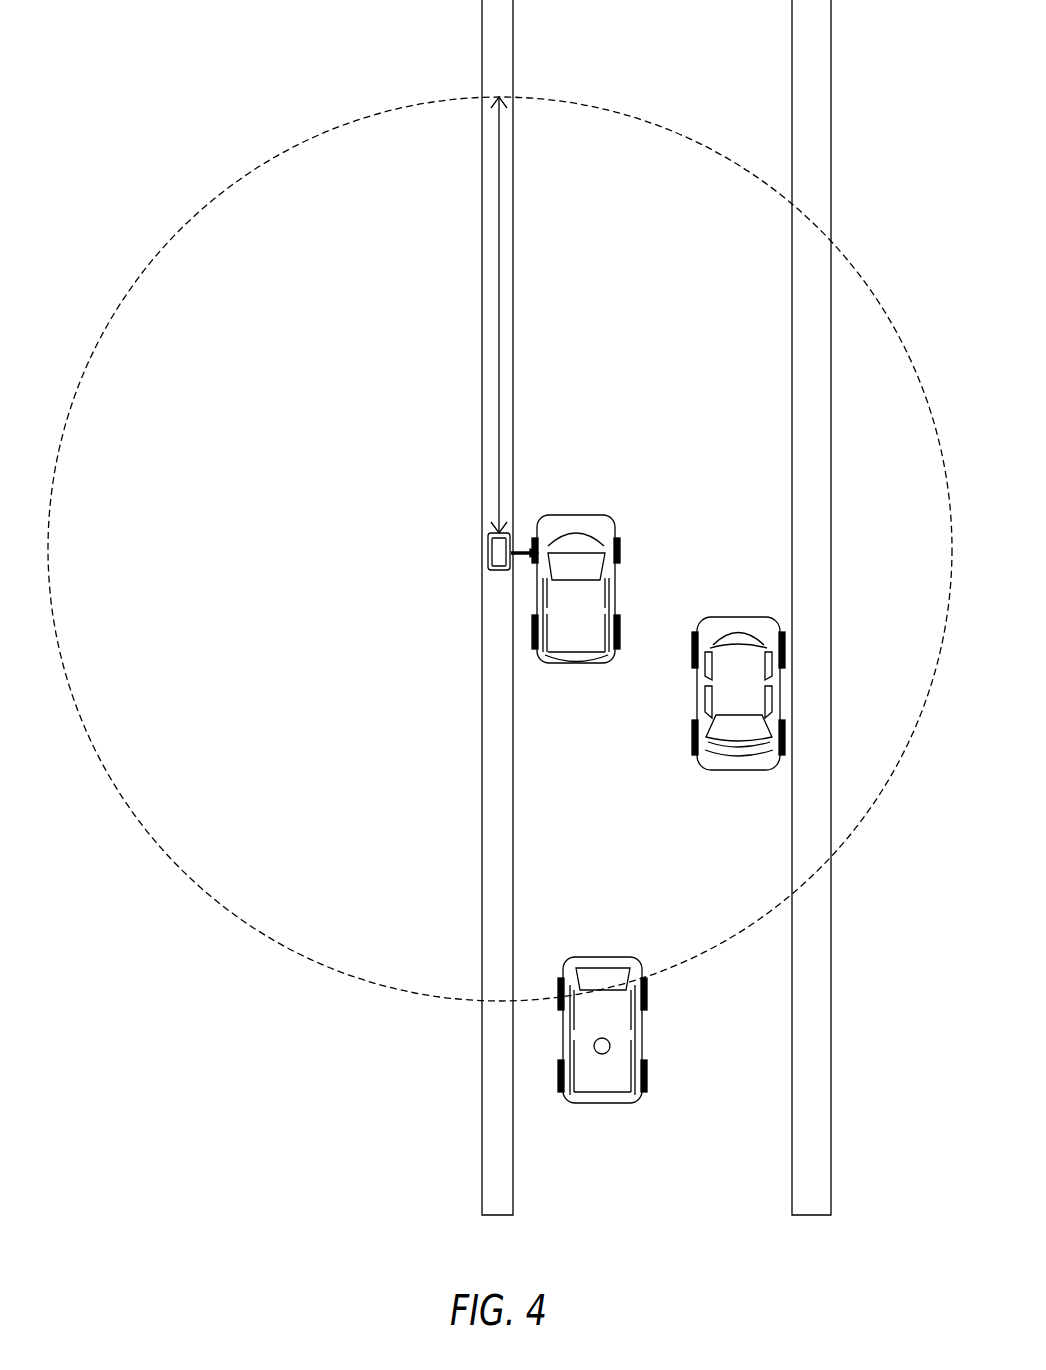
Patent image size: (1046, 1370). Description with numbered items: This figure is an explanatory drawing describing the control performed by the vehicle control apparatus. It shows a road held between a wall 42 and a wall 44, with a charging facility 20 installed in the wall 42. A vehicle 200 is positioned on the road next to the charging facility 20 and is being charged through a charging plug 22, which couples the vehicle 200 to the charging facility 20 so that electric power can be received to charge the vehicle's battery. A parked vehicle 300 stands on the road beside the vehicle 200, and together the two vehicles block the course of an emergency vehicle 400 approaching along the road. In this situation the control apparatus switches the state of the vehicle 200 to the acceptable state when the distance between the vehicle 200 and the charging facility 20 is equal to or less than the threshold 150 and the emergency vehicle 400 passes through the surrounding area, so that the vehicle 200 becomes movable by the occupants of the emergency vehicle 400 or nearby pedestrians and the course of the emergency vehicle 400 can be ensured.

The wall 42 is at (481, 76).
The wall 44 is at (834, 74).
The threshold 150 is at (496, 382).
The charging facility 20 is at (486, 548).
The charging plug 22 is at (530, 557).
The vehicle 200 is at (565, 665).
The parked vehicle 300 is at (738, 775).
The emergency vehicle 400 is at (601, 956).